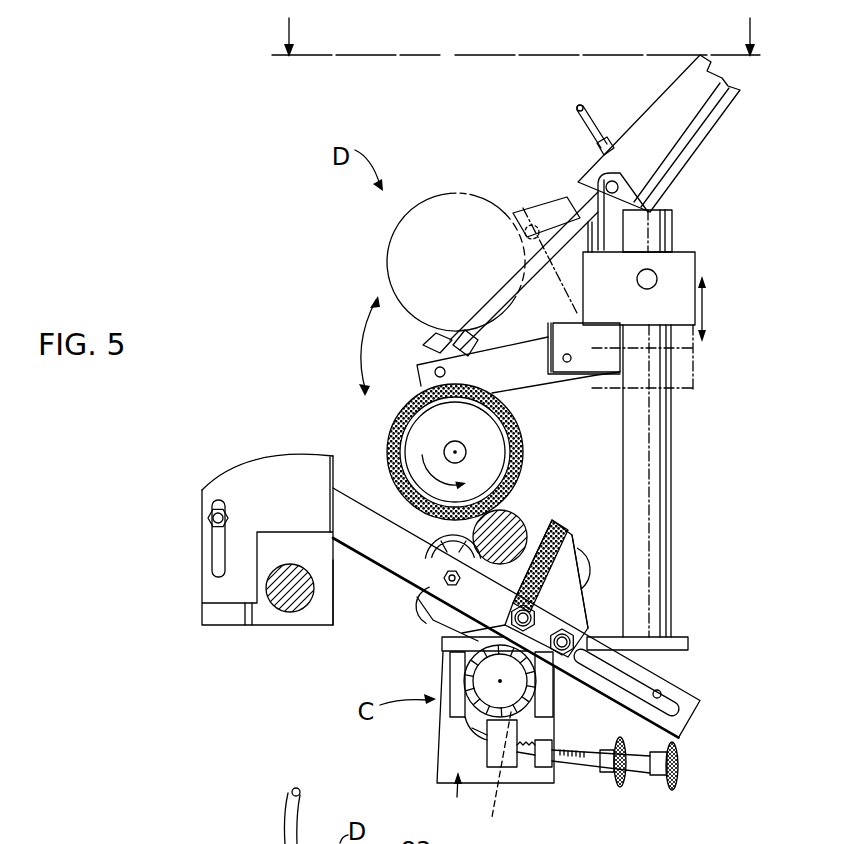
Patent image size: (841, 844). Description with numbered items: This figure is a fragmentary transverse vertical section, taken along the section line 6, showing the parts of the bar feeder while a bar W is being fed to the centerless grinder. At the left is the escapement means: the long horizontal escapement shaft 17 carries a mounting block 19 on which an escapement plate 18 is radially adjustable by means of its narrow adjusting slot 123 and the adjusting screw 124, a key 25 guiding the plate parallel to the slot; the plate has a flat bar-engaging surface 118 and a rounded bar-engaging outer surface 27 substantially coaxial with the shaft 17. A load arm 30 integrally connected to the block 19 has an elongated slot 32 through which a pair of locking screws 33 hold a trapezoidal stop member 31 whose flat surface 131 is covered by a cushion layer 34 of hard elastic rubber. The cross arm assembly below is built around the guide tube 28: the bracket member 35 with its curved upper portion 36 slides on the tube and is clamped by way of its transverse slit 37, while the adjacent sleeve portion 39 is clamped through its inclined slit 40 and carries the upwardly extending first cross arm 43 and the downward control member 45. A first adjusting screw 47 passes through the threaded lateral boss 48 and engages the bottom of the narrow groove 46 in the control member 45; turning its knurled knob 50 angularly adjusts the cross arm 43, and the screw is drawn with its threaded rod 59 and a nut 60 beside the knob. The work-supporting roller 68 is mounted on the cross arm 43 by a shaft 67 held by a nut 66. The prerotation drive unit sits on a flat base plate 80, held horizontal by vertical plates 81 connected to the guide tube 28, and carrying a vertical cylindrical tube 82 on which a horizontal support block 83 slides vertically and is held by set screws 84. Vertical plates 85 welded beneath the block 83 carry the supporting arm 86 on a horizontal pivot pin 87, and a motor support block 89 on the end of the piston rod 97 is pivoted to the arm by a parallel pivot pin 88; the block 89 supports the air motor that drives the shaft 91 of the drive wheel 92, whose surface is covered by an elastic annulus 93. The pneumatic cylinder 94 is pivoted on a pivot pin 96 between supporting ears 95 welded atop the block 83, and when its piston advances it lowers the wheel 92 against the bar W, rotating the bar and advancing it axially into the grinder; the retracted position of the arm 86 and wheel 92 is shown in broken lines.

The section line 6- 6 is at (520, 55).
The escapement shaft 17 is at (290, 610).
The escapement plate 18 is at (285, 457).
The mounting block 19 is at (318, 617).
The key 25 is at (240, 625).
The rounded bar-engaging outer surface 27 is at (245, 460).
The guide tube 28 is at (475, 730).
The load arm 30 is at (355, 515).
The stop member 31 is at (580, 597).
The elongated slot 32 is at (661, 692).
The locking screws 33 is at (562, 629).
The cushion layer 34 is at (542, 553).
The bracket member 35 is at (495, 740).
The curved upper portion 36 is at (472, 657).
The transverse slit 37 is at (593, 693).
The sleeve portion 39 is at (473, 720).
The inclined slit 40 is at (462, 633).
The first cross arm 43 is at (450, 617).
The control member 45 is at (490, 755).
The narrow groove 46 is at (495, 778).
The first adjusting screw 47 is at (627, 773).
The lateral boss 48 is at (535, 770).
The knurled knob 50 is at (677, 782).
The threaded rod 59 is at (585, 765).
The lock nut 60 is at (605, 773).
The nut 66 is at (505, 570).
The shaft 67 is at (452, 577).
The work-supporting roller 68 is at (578, 555).
The base plate 80 is at (677, 640).
The support 81 is at (453, 700).
The vertical cylindrical tube 82 is at (667, 413).
The support block 83 is at (687, 265).
The set screws 84 is at (645, 283).
The vertical plates 85 is at (552, 323).
The supporting arm 86 is at (532, 380).
The pivot pin 87 is at (562, 358).
The pivot pin 88 is at (436, 370).
The motor support block 89 is at (433, 341).
The shaft 91 is at (448, 450).
The drive wheel 92 is at (452, 192).
The annulus 93 is at (518, 455).
The pneumatic cylinder 94 is at (668, 90).
The supporting ears 95 is at (630, 190).
The pivot pin 96 is at (587, 160).
The piston rod 97 is at (517, 280).
The flat bar-engaging surface 118 is at (337, 456).
The adjusting slot 123 is at (212, 550).
The adjusting screw 124 is at (208, 515).
The flat surface 131 is at (578, 553).
The bar W is at (503, 520).